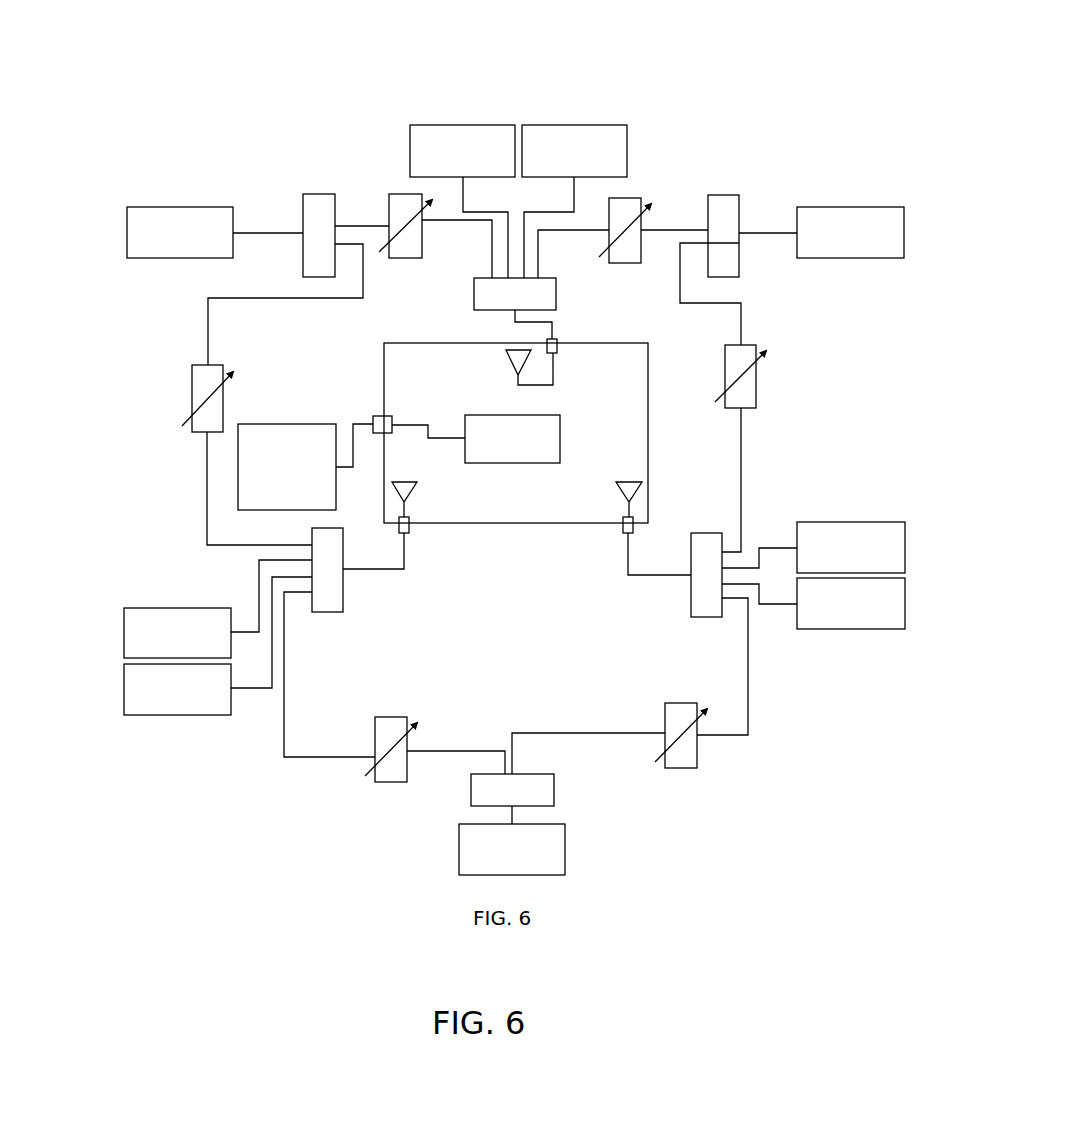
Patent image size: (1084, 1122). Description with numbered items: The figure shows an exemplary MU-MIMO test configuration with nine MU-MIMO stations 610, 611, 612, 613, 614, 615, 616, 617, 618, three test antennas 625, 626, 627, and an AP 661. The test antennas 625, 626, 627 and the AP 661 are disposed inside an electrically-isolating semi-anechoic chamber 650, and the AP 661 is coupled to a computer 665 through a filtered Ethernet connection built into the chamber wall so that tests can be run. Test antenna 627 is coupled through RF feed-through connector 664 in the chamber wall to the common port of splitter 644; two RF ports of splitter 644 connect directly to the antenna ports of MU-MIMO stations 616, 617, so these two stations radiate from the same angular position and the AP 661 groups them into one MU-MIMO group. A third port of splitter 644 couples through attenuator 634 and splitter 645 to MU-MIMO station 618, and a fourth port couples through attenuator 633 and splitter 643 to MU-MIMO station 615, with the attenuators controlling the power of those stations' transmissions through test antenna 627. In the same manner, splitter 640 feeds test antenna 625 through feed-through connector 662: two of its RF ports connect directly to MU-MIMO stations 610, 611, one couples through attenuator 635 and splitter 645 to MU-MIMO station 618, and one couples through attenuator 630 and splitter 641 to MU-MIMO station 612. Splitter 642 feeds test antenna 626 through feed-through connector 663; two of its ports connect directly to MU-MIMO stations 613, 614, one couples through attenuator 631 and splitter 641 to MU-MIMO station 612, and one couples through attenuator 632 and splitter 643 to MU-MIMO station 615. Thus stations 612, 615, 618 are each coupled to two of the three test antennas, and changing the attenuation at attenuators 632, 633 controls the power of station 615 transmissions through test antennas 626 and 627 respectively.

The MU-MIMO station 610 is at (443, 125).
The MU-MIMO station 611 is at (592, 125).
The MU-MIMO station 612 is at (818, 207).
The MU-MIMO station 613 is at (810, 522).
The MU-MIMO station 614 is at (820, 629).
The MU-MIMO station 615 is at (565, 855).
The MU-MIMO station 616 is at (160, 715).
The MU-MIMO station 617 is at (155, 608).
The MU-MIMO station 618 is at (193, 258).
The test antenna 625 is at (522, 352).
The test antenna 626 is at (630, 482).
The test antenna 627 is at (409, 500).
The attenuator 630 is at (630, 198).
The attenuator 631 is at (758, 380).
The attenuator 632 is at (697, 757).
The attenuator 633 is at (378, 775).
The attenuator 634 is at (192, 385).
The attenuator 635 is at (403, 194).
The splitter 640 is at (474, 292).
The splitter 641 is at (739, 268).
The splitter 642 is at (707, 533).
The splitter 643 is at (554, 782).
The splitter 644 is at (343, 595).
The splitter 645 is at (308, 194).
The semi-anechoic chamber 650 is at (580, 523).
The AP 661 is at (560, 438).
The feed-through connector 662 is at (556, 348).
The feed-through connector 663 is at (623, 533).
The feed-through connector 664 is at (410, 533).
The computer 665 is at (312, 424).